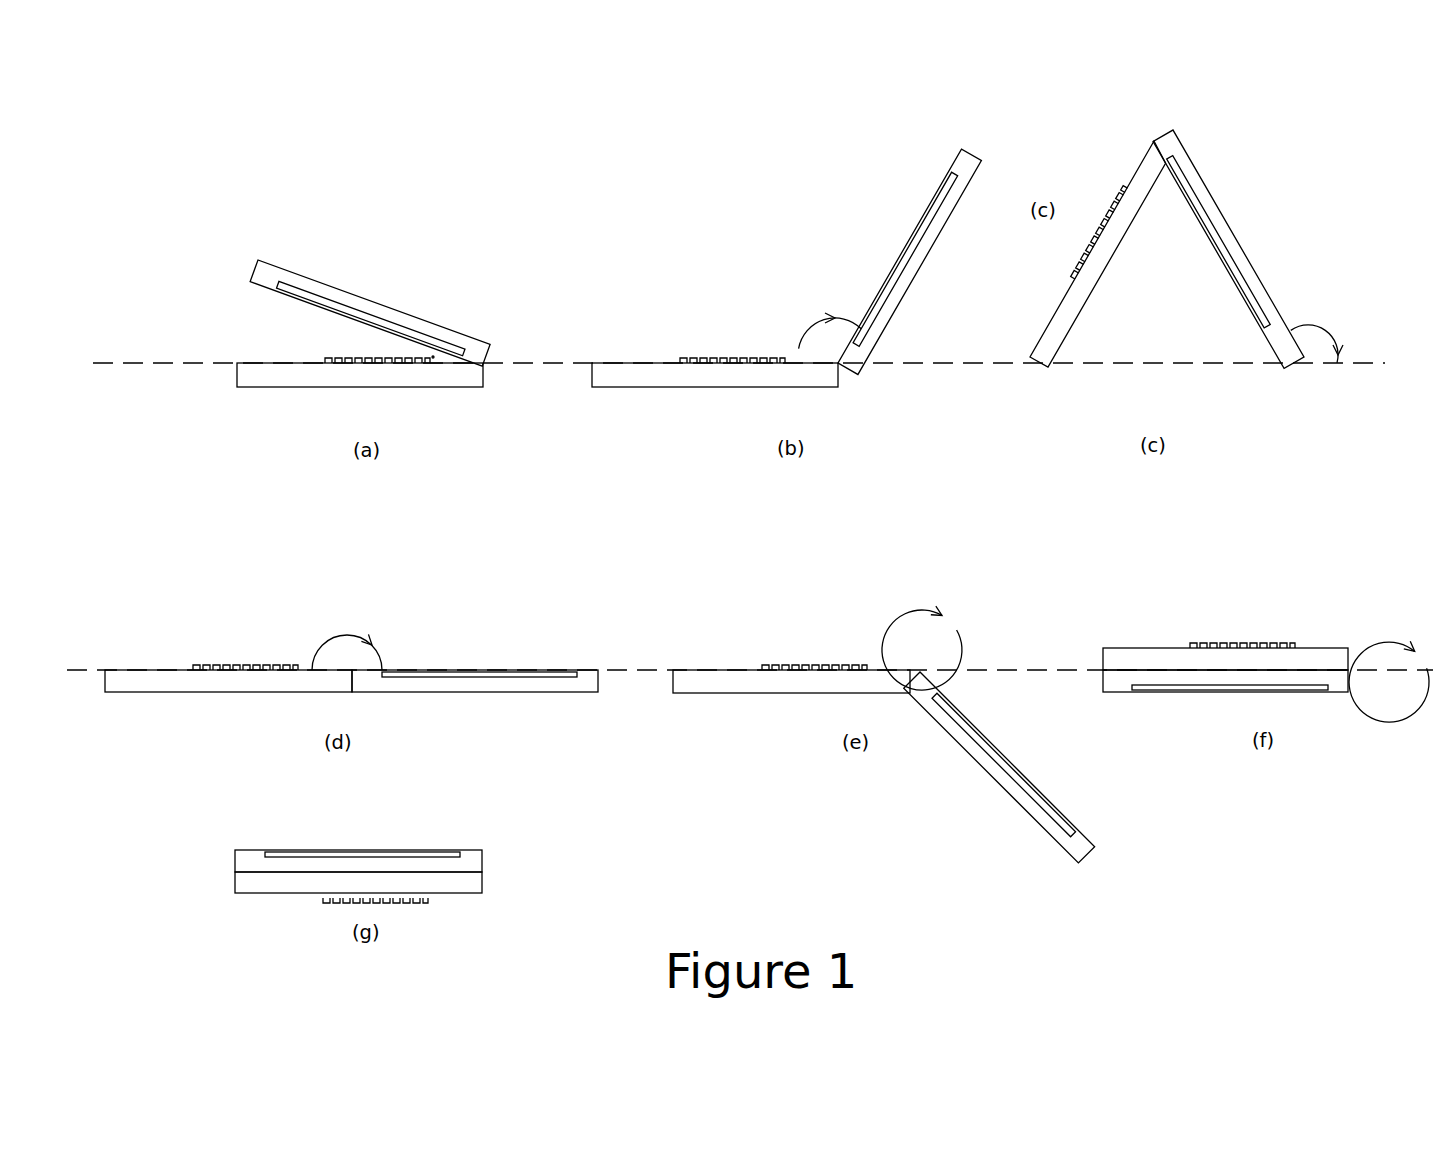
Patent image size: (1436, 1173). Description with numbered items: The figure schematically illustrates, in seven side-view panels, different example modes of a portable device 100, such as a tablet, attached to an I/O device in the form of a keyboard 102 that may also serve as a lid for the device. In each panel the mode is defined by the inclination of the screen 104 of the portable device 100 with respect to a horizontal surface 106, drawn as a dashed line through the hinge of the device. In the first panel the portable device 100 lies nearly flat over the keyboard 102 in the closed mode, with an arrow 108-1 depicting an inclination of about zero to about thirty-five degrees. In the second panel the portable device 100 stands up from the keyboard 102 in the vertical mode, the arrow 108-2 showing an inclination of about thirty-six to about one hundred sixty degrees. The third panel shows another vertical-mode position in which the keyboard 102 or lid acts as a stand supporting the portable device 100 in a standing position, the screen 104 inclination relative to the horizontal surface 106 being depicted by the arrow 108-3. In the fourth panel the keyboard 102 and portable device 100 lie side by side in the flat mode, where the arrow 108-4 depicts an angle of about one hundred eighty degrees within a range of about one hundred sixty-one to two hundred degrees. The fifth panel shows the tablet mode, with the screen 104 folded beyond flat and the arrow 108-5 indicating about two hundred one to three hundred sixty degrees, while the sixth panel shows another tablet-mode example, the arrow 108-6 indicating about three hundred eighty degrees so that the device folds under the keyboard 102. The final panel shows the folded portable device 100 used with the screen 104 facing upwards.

The portable device 100 is at (791, 501).
The keyboard 102 is at (726, 538).
The screen 104 is at (762, 506).
The horizontal surface 106 is at (750, 516).
The arrow 108-1 is at (522, 334).
The arrow 108-2 is at (759, 310).
The arrow 108-3 is at (1359, 322).
The arrow 108-4 is at (286, 623).
The arrow 108-5 is at (849, 631).
The arrow 108-6 is at (1333, 654).